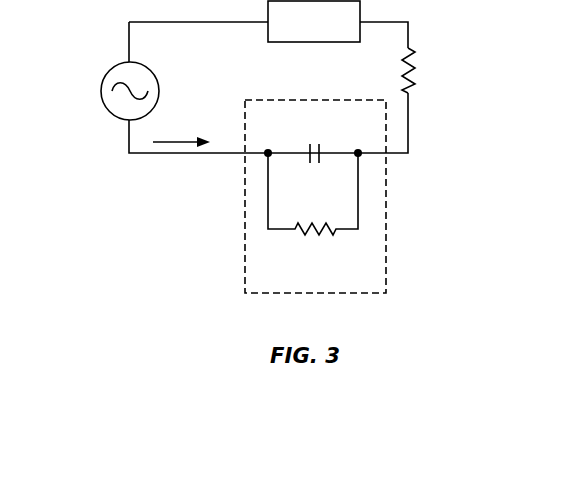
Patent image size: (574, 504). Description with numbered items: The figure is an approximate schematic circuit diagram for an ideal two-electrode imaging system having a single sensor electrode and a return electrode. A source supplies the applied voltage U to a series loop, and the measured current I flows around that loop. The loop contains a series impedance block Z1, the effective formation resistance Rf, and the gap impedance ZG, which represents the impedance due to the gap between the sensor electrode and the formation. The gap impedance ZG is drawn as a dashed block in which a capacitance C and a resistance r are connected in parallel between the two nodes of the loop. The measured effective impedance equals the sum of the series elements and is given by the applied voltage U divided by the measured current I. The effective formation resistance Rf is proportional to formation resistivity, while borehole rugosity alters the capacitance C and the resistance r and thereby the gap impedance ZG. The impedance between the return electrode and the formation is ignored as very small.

The applied voltage U is at (130, 79).
The measured current I is at (181, 128).
The impedance Z1 is at (314, 21).
The effective formation resistance Rf is at (422, 68).
The gap impedance ZG is at (315, 196).
The capacitance C is at (313, 139).
The resistance r is at (313, 194).